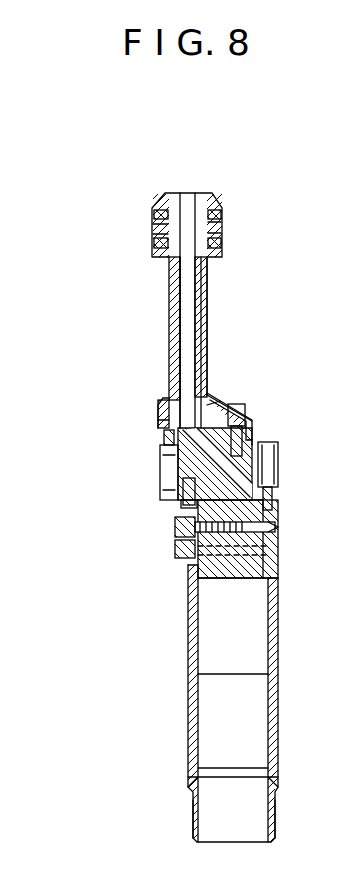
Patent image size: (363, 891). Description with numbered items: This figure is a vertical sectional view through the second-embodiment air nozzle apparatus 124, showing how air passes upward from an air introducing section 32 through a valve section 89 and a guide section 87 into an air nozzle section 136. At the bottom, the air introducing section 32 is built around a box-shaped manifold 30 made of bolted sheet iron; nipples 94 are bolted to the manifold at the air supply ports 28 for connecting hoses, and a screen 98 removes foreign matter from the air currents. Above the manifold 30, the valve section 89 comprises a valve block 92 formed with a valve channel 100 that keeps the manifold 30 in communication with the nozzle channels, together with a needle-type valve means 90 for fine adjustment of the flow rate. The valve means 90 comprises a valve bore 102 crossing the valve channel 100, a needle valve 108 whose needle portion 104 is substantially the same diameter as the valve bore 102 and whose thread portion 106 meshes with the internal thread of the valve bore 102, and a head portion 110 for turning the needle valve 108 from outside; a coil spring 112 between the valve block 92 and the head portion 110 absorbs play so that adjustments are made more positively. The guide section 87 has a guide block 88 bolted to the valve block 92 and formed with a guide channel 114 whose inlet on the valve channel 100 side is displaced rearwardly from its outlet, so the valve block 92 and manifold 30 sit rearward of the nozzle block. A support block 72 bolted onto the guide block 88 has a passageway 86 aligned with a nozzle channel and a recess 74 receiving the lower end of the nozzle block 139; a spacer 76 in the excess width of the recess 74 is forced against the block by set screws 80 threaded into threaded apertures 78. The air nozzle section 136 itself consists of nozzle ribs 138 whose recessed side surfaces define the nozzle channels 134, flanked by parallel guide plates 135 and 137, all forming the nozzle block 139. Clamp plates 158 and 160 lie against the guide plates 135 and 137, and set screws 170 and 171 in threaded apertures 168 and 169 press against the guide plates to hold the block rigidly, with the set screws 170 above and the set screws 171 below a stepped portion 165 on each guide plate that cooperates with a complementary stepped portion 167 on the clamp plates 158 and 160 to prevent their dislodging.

The air nozzle section 136 is at (90, 190).
The clamp plate 158 is at (158, 215).
The set screw 170 is at (166, 207).
The air nozzle apparatus 124 is at (197, 192).
The threaded aperture 168 is at (215, 205).
The stepped portion 165 is at (219, 222).
The complementary stepped portion 167 is at (155, 225).
The clamp plate 160 is at (218, 237).
The set screw 171 is at (156, 247).
The threaded aperture 169 is at (222, 243).
The guide plate 137 is at (204, 285).
The nozzle channel 134 is at (190, 302).
The guide plate 135 is at (172, 318).
The nozzle rib 138 is at (200, 328).
The nozzle block 139 is at (209, 345).
The recess 74 is at (170, 400).
The set screw 80 is at (165, 420).
The guide section 87 is at (90, 430).
The support block 72 is at (253, 425).
The spacer 76 is at (236, 404).
The threaded aperture 78 is at (250, 412).
The passageway 86 is at (168, 448).
The guide channel 114 is at (270, 442).
The guide block 88 is at (272, 468).
The needle valve 108 is at (250, 508).
The thread portion 106 is at (185, 495).
The valve section 89 is at (90, 503).
The valve block 92 is at (276, 552).
The valve bore 102 is at (275, 527).
The needle portion 104 is at (272, 520).
The head portion 110 is at (176, 527).
The coil spring 112 is at (176, 548).
The valve means 90 is at (185, 568).
The valve channel 100 is at (255, 572).
The air introducing section 32 is at (90, 842).
The manifold 30 is at (278, 635).
The screen 98 is at (270, 674).
The air supply port 28 is at (262, 770).
The nipple 94 is at (276, 815).